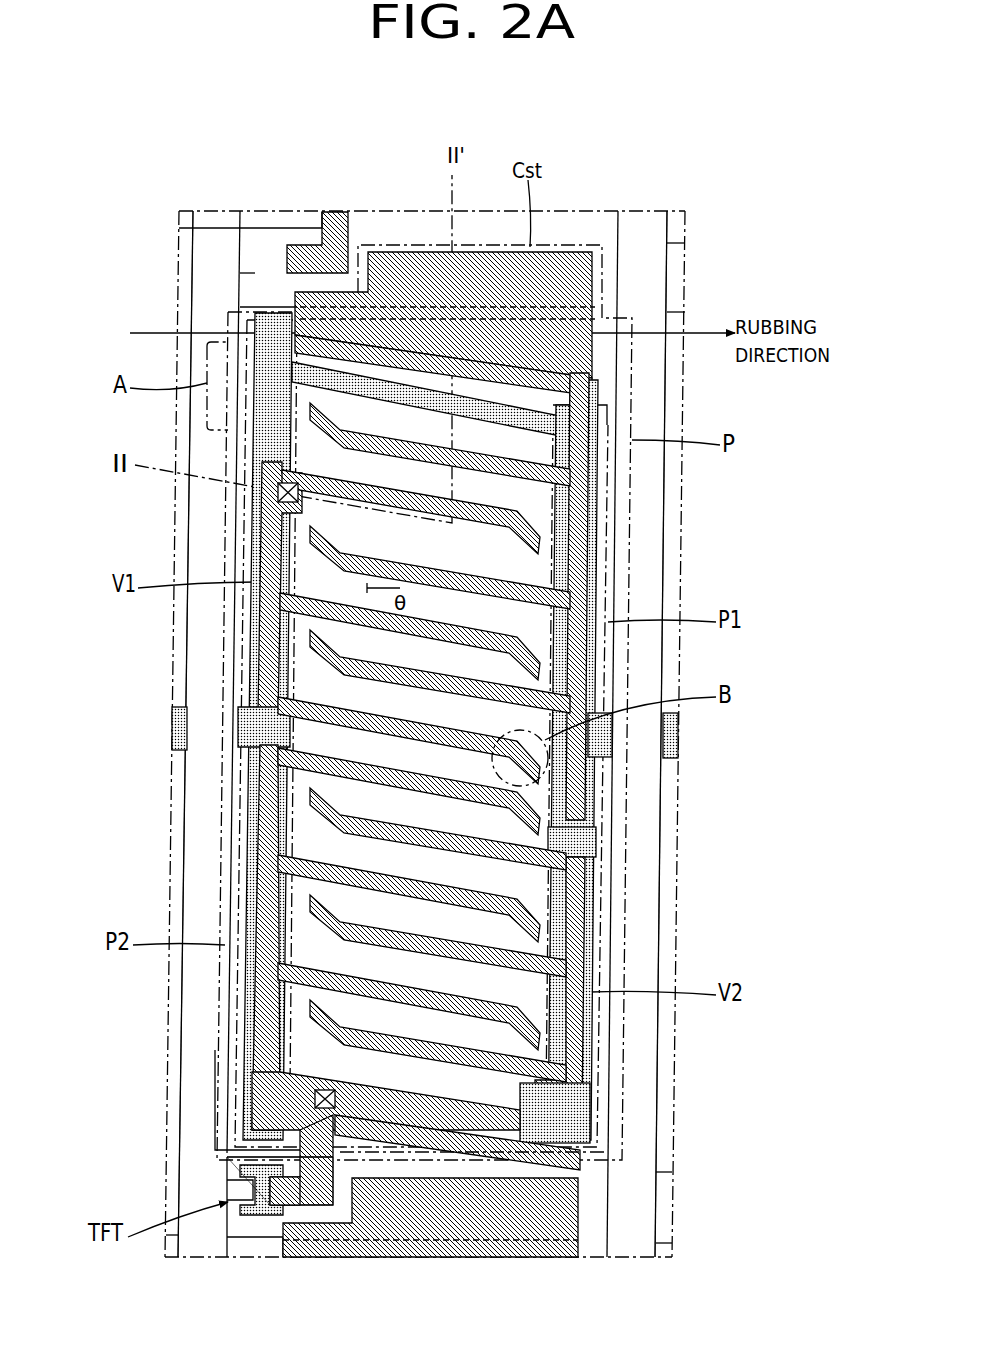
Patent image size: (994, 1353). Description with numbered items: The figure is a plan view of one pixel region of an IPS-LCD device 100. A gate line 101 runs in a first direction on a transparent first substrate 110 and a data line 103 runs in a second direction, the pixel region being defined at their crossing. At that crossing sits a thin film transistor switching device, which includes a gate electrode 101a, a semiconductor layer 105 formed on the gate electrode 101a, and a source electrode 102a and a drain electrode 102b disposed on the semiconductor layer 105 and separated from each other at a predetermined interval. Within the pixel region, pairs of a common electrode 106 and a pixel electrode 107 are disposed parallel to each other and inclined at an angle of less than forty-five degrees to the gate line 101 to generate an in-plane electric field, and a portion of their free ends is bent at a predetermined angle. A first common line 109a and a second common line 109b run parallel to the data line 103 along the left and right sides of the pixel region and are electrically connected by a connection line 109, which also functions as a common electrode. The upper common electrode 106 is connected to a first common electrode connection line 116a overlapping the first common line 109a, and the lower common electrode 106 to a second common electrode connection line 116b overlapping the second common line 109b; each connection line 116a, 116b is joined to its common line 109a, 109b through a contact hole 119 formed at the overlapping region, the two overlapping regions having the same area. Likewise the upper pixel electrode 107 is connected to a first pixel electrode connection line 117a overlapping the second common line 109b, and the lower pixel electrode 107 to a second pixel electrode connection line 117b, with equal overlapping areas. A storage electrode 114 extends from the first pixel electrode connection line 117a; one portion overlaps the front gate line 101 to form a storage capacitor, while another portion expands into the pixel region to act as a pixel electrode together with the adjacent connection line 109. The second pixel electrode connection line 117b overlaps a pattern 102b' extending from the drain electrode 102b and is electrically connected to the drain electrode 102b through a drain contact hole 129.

The IPS-LCD device 100 is at (142, 192).
The transparent first substrate 110 is at (685, 228).
The storage electrode 114 is at (592, 285).
The connection line 109 is at (560, 386).
The first common line 109a is at (180, 725).
The second common line 109b is at (600, 847).
The first common electrode connection line 116a is at (262, 642).
The second common electrode connection line 116b is at (585, 940).
The first pixel electrode connection line 117a is at (598, 542).
The second pixel electrode connection line 117b is at (262, 882).
The contact hole 119 is at (280, 495).
The drain contact hole 129 is at (315, 1092).
The common electrode 106 is at (258, 968).
The pixel electrode 107 is at (272, 988).
The data line 103 is at (190, 1115).
The gate line 101 is at (655, 1207).
The gate electrode 101a is at (245, 1215).
The source electrode 102a is at (235, 1187).
The drain electrode 102b is at (304, 1251).
The pattern extending from the drain electrode 102b' is at (551, 1142).
The semiconductor layer 105 is at (262, 1215).